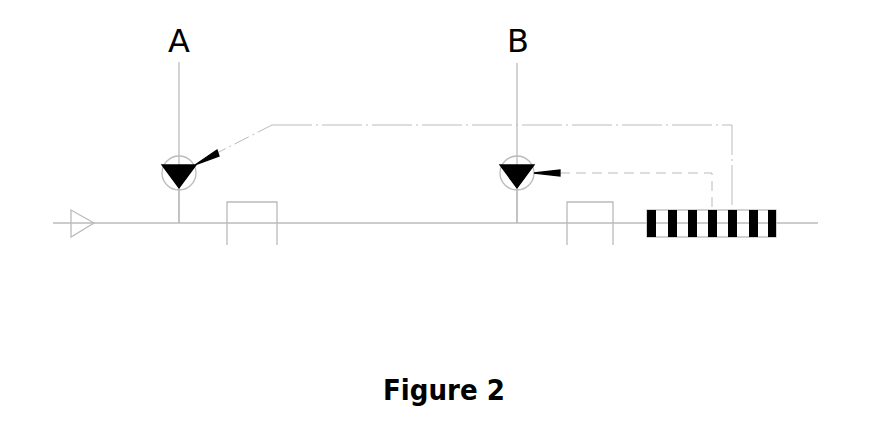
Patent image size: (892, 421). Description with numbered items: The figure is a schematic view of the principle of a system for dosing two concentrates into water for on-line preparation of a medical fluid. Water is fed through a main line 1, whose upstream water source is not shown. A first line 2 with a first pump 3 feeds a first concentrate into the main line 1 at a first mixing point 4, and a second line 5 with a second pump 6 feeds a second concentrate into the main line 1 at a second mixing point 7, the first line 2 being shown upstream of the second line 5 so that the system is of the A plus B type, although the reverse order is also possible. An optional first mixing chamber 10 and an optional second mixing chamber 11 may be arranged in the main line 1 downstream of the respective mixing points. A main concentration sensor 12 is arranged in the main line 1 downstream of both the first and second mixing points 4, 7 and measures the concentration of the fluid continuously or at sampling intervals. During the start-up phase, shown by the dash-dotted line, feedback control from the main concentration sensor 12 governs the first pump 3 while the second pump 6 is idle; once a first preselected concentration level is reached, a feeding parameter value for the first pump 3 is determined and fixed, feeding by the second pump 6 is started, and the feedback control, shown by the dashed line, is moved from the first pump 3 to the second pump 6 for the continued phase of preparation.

The main line 1 is at (137, 223).
The first line 2 is at (179, 100).
The first pump 3 is at (167, 160).
The first mixing point 4 is at (179, 223).
The second line 5 is at (517, 100).
The second pump 6 is at (528, 162).
The second mixing point 7 is at (517, 223).
The first mixing chamber 10 is at (250, 245).
The second mixing chamber 11 is at (585, 245).
The main concentration sensor 12 is at (702, 237).